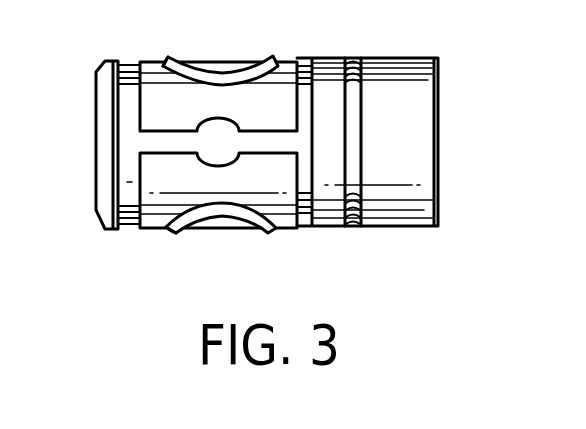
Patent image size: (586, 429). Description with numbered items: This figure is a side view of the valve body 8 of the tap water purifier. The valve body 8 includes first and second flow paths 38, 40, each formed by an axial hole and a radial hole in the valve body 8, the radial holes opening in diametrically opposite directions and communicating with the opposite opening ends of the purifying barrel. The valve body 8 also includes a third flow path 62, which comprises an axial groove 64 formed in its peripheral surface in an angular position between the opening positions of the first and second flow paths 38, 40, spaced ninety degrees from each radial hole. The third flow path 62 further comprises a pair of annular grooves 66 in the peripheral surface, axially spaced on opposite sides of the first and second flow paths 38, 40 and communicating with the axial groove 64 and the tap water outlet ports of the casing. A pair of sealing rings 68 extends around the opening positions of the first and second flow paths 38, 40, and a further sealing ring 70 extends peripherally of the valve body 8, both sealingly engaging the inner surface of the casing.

The valve body 8 is at (413, 92).
The first flow path 38 is at (221, 62).
The second flow path 40 is at (218, 226).
The third flow path 62 is at (263, 140).
The axial groove 64 is at (168, 143).
The annular grooves 66 is at (138, 195).
The sealing rings 68 is at (170, 62).
The sealing ring 70 is at (366, 210).